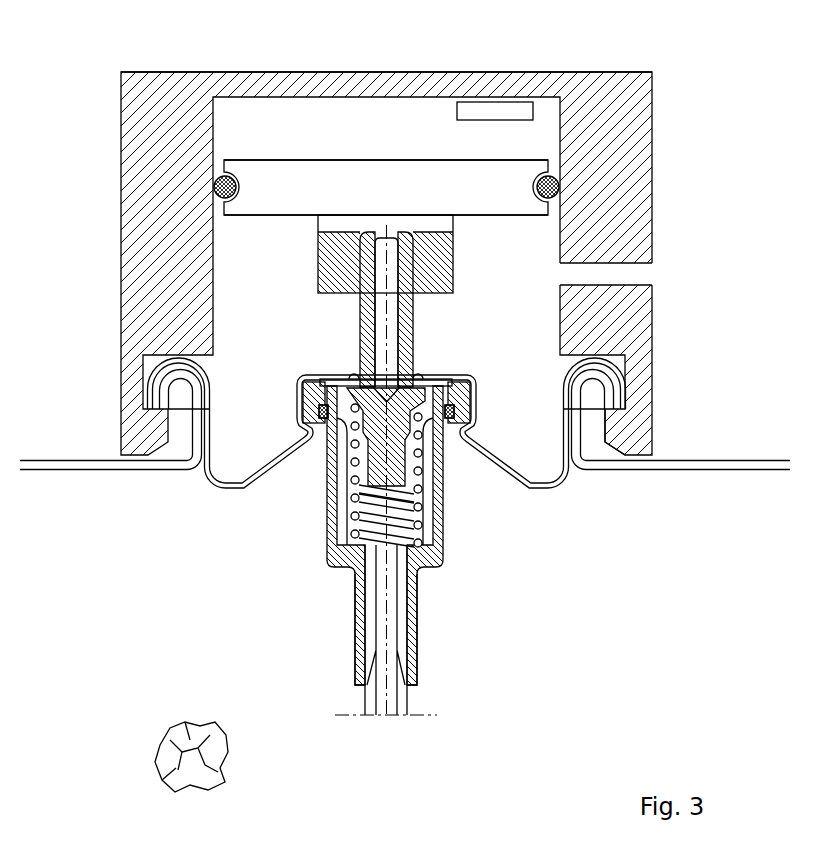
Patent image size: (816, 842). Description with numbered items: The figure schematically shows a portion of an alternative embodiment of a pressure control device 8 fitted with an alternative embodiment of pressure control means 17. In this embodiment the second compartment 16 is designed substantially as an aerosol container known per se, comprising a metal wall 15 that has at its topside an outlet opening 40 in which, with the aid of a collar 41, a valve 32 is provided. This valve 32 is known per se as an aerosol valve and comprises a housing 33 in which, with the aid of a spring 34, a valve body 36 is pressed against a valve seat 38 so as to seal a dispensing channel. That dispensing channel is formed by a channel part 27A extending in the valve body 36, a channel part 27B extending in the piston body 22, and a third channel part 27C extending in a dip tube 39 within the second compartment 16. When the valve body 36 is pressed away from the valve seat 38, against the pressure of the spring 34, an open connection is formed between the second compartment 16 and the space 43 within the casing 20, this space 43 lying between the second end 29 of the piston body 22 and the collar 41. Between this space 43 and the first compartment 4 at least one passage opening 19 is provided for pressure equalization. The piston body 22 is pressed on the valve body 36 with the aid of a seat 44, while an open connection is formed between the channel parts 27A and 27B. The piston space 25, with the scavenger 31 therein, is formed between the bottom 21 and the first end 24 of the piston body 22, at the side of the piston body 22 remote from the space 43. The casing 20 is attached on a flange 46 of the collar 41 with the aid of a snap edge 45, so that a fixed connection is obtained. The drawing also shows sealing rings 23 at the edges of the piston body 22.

The first compartment 4 is at (710, 333).
The pressure control device 8 is at (753, 393).
The metal wall 15 is at (87, 471).
The second compartment 16 is at (561, 658).
The pressure control means 17 is at (457, 400).
The passage opening 19 is at (630, 273).
The casing 20 is at (612, 195).
The bottom 21 is at (330, 84).
The piston body 22 is at (284, 146).
The O-ring seal 23 is at (214, 187).
The first end of the piston body 24 is at (272, 152).
The piston space 25 is at (328, 141).
The channel part 27A is at (383, 316).
The channel part 27B is at (398, 254).
The channel part 27C is at (389, 707).
The second end of the piston body 29 is at (246, 218).
The scavenger 31 is at (510, 108).
The valve 32 is at (436, 597).
The housing 33 is at (335, 563).
The spring 34 is at (355, 518).
The valve body 36 is at (407, 400).
The valve seat 38 is at (340, 378).
The dip tube 39 is at (372, 698).
The outlet opening 40 is at (576, 494).
The collar 41 is at (532, 462).
The space 43 is at (486, 333).
The seat 44 is at (340, 253).
The snap edge 45 is at (615, 423).
The flange 46 is at (607, 393).